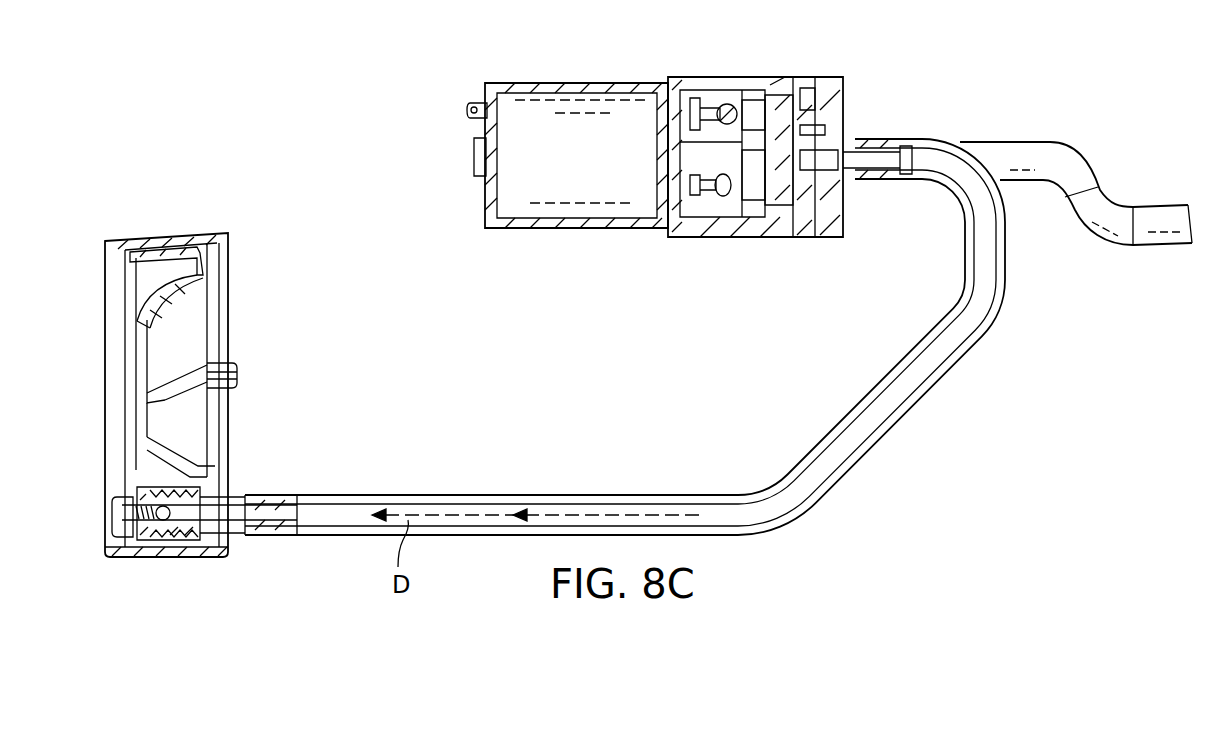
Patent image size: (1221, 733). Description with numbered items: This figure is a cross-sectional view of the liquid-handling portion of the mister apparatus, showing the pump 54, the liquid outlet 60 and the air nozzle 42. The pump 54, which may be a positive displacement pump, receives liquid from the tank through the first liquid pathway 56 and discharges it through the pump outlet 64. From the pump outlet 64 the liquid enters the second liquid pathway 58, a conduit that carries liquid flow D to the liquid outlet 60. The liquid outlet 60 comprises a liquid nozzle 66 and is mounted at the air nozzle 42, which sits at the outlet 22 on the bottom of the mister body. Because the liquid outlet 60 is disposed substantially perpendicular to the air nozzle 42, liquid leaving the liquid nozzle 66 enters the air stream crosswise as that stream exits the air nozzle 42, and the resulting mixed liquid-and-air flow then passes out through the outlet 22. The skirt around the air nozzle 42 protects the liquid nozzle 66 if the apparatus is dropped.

The outlet 22 is at (142, 333).
The air nozzle 42 is at (207, 277).
The pump 54 is at (570, 83).
The first liquid pathway 56 is at (1050, 142).
The second liquid pathway 58 is at (738, 513).
The liquid outlet 60 is at (122, 506).
The pump outlet 64 is at (915, 152).
The liquid nozzle 66 is at (110, 517).